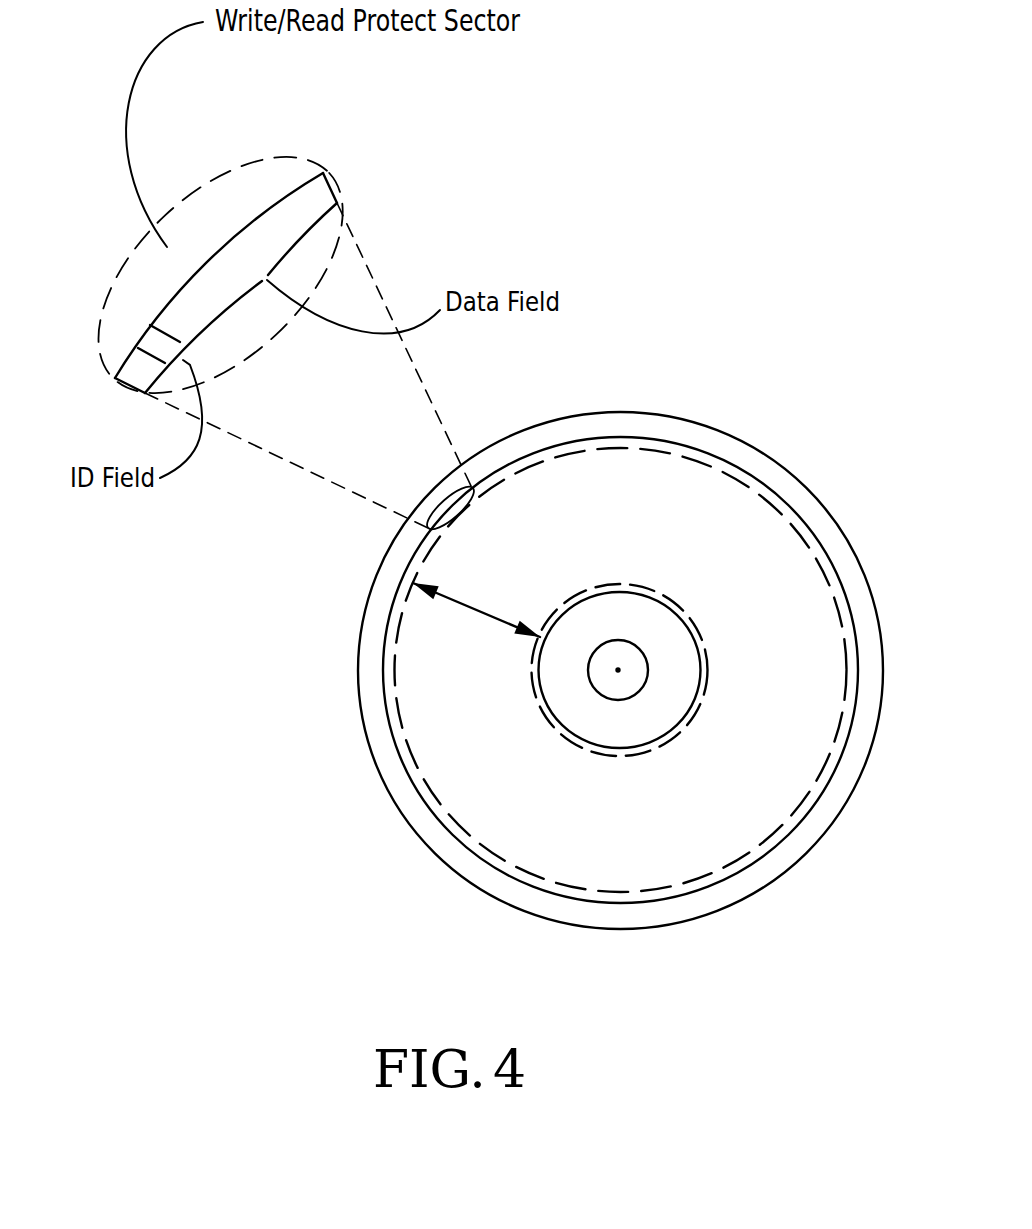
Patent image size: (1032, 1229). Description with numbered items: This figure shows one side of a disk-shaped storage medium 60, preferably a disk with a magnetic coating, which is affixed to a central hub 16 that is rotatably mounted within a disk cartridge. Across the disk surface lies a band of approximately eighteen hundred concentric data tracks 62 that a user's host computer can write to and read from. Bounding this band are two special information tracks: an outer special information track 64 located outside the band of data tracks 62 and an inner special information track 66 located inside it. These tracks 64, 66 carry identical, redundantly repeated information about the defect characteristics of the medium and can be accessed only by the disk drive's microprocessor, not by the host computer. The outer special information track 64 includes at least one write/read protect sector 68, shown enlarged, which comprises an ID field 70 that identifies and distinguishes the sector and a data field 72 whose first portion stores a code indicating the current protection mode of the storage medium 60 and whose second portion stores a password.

The hub 16 is at (627, 662).
The disk-shaped storage medium 60 is at (797, 927).
The data tracks 62 is at (491, 583).
The outer special information track 64 is at (366, 745).
The inner special information track 66 is at (592, 775).
The write/read protect sector 68 is at (280, 203).
The ID field 70 is at (150, 345).
The data field 72 is at (318, 192).